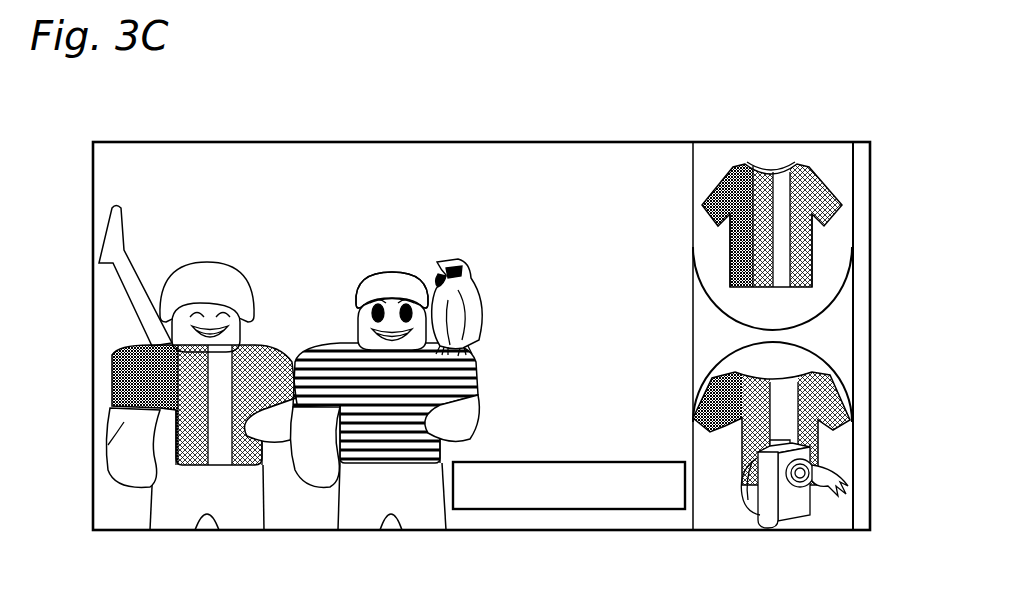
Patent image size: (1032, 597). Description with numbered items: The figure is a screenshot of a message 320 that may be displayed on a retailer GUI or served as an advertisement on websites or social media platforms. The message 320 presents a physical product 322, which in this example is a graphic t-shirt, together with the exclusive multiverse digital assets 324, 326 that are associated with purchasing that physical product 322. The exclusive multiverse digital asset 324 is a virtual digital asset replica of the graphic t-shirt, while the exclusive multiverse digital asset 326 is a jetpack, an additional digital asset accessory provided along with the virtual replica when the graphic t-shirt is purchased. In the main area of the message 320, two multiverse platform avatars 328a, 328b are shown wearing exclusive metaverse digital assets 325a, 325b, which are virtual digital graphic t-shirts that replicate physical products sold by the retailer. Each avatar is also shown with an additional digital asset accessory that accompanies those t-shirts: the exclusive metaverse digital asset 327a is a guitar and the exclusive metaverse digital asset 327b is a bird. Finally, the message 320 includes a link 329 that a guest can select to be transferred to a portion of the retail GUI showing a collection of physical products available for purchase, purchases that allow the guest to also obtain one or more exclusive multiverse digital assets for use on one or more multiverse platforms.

The message 320 is at (732, 100).
The physical product 322 is at (826, 196).
The exclusive multiverse digital asset 324 is at (822, 378).
The exclusive metaverse digital asset 325a is at (192, 472).
The exclusive metaverse digital asset 325b is at (413, 462).
The exclusive multiverse digital asset 326 is at (795, 522).
The exclusive metaverse digital asset 327a is at (112, 233).
The exclusive metaverse digital asset 327b is at (450, 260).
The multiverse platform avatar 328a is at (123, 447).
The multiverse platform avatar 328b is at (392, 282).
The link 329 is at (593, 498).